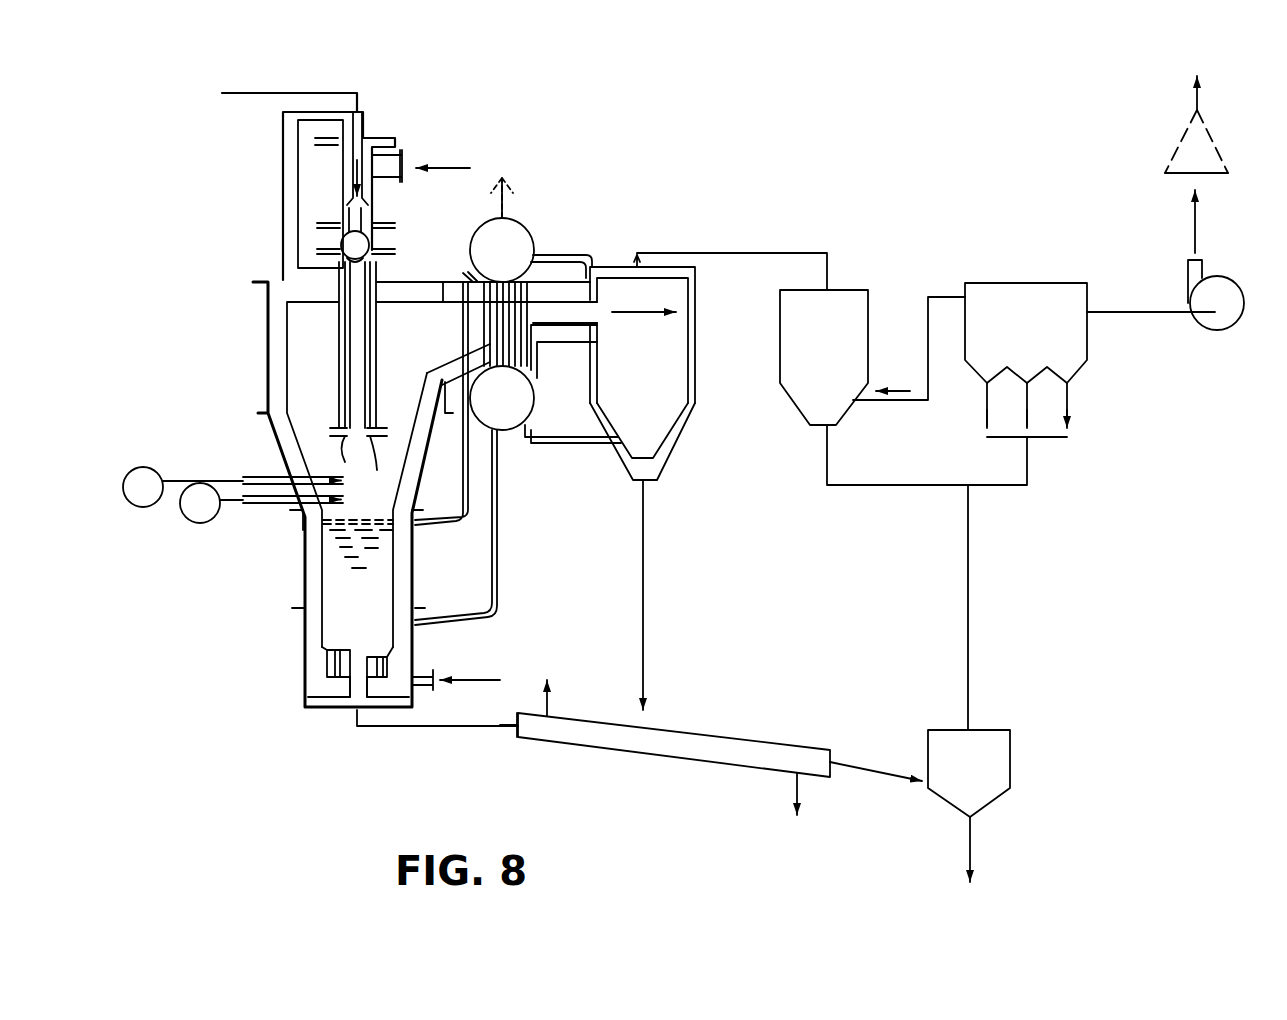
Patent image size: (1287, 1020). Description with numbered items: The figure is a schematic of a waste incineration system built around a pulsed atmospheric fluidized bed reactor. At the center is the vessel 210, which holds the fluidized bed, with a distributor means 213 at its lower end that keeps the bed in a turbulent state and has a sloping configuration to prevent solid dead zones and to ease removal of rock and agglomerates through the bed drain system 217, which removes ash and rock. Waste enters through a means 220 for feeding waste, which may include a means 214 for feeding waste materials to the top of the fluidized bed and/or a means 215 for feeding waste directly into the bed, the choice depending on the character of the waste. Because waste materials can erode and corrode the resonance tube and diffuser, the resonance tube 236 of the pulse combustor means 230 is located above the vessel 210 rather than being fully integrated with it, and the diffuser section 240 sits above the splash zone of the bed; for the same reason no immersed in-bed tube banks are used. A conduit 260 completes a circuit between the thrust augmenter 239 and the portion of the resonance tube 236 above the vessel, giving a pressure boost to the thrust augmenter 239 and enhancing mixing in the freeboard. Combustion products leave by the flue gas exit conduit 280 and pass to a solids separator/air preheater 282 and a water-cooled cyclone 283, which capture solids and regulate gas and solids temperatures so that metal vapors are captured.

The vessel 210 is at (302, 580).
The distributor means 213 is at (327, 665).
The means for feeding waste materials to the top of the fluidized bed 214 is at (273, 477).
The means for feeding waste directly into the fluidized bed 215 is at (290, 503).
The bed drain system 217 is at (357, 687).
The means for feeding waste 220 is at (184, 444).
The pulse combustor means 230 is at (340, 243).
The resonance tube 236 is at (342, 365).
The thrust augmenter 239 is at (367, 193).
The diffuser section 240 is at (340, 462).
The conduit 260 is at (283, 163).
The flue gas exit conduit 280 is at (540, 317).
The solids separator/air preheater 282 is at (470, 274).
The water-cooled cyclone 283 is at (677, 447).